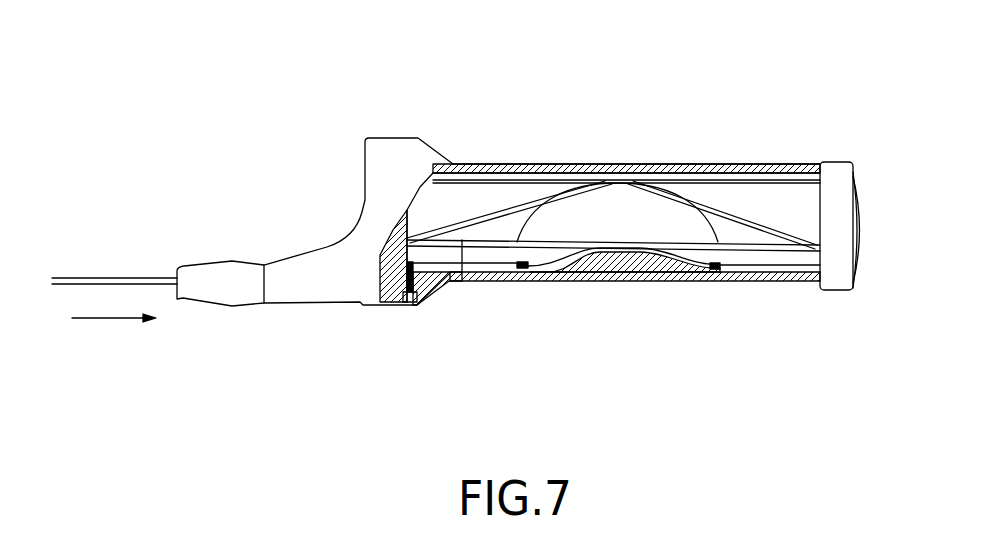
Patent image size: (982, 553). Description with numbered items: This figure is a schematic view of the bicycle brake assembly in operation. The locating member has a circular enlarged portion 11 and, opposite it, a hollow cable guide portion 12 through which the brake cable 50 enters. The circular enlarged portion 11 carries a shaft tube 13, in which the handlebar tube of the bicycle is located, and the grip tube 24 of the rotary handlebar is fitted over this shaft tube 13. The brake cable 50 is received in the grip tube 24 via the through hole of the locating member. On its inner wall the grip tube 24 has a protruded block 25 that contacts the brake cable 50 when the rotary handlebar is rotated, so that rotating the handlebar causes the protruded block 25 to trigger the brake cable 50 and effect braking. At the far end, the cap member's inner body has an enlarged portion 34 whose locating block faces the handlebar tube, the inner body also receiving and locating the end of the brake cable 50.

The circular enlarged portion 11 is at (392, 147).
The cable guide portion 12 is at (275, 292).
The shaft tube 13 is at (487, 167).
The grip tube 24 is at (683, 165).
The protruded block 25 is at (530, 274).
The enlarged portion 34 is at (833, 162).
The brake cable 50 is at (75, 283).